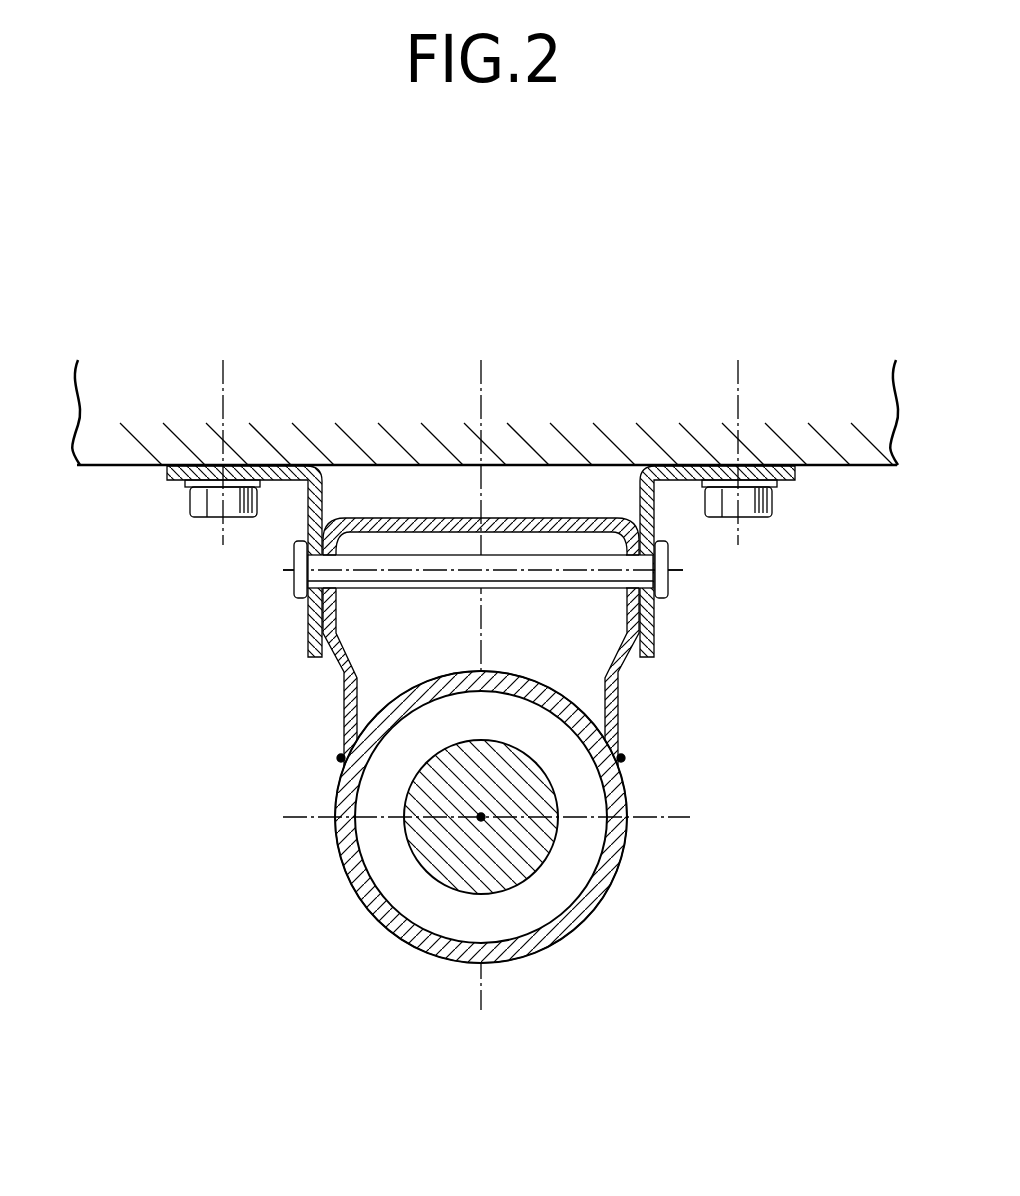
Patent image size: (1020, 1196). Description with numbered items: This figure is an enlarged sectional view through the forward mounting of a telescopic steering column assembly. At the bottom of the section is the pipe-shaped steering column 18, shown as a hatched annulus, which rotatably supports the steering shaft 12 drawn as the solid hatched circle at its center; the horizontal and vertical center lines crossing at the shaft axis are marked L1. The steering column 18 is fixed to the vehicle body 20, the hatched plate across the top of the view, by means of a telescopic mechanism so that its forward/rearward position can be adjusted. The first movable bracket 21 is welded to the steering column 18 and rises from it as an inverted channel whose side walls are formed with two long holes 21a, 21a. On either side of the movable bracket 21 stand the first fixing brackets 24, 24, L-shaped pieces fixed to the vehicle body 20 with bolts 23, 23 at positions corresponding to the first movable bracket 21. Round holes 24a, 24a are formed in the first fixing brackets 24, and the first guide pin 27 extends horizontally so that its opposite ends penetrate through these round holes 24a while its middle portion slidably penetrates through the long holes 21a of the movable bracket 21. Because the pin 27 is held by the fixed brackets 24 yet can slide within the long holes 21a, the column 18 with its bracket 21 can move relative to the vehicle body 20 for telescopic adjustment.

The steering shaft 12 is at (442, 867).
The steering column 18 is at (577, 913).
The vehicle body 20 is at (118, 457).
The first movable bracket 21 is at (333, 703).
The long holes 21a is at (338, 581).
The bolts 23 is at (213, 510).
The first fixing brackets 24 is at (300, 624).
The round holes 24a is at (301, 570).
The first guide pin 27 is at (500, 580).
The axis line L1 is at (481, 817).